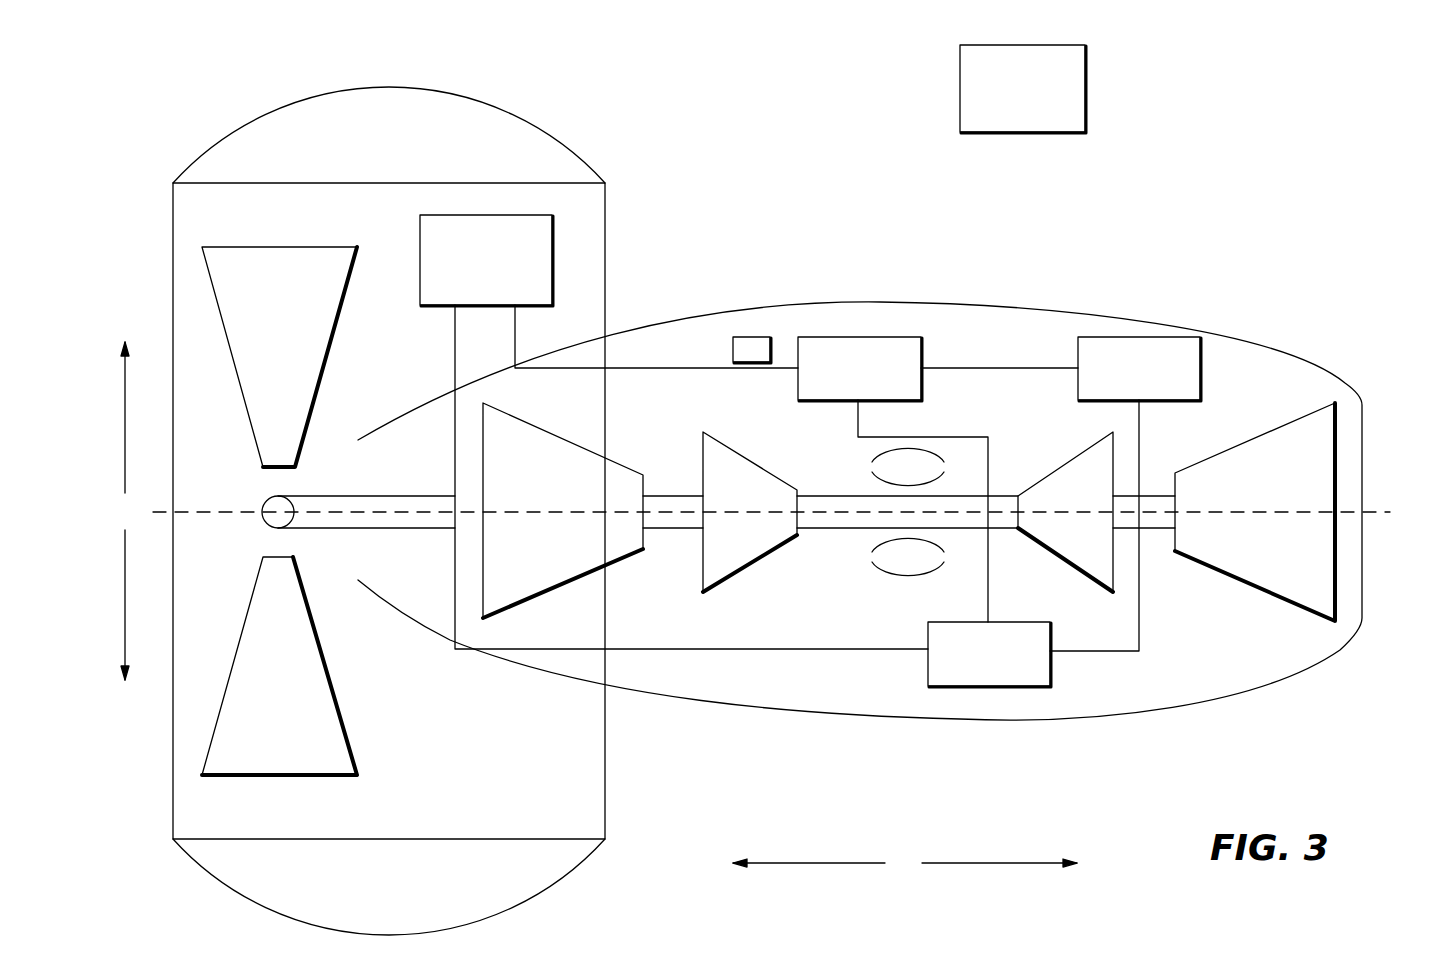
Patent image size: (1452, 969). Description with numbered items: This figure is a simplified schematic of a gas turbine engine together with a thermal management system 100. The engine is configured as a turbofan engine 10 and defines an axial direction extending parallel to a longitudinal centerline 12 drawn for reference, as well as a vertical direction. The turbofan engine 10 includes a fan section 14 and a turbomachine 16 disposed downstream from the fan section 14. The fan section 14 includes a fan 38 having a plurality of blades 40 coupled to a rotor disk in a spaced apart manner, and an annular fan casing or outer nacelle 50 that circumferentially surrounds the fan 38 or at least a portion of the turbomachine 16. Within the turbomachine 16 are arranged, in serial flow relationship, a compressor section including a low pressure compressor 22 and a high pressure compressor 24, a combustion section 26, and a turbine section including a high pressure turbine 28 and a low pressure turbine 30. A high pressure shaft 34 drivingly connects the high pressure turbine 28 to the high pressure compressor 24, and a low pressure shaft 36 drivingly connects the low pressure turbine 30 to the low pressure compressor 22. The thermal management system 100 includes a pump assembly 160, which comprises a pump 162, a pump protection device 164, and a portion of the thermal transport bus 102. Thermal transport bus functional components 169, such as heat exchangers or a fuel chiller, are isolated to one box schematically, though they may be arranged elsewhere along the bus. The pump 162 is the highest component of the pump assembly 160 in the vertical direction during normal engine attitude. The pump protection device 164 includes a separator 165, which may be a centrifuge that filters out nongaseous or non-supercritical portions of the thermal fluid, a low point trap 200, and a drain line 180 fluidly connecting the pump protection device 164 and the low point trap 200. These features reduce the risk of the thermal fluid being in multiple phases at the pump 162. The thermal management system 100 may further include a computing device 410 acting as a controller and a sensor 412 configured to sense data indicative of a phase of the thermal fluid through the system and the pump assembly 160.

The turbofan engine 10 is at (1150, 148).
The longitudinal centerline 12 is at (1385, 510).
The fan section 14 is at (150, 118).
The turbomachine 16 is at (742, 775).
The low pressure compressor 22 is at (575, 445).
The high pressure compressor 24 is at (745, 470).
The combustion section 26 is at (870, 585).
The high pressure turbine 28 is at (1062, 478).
The low pressure turbine 30 is at (1352, 448).
The high pressure shaft 34 is at (835, 530).
The low pressure shaft 36 is at (672, 530).
The fan 38 is at (187, 713).
The blades 40 is at (320, 696).
The outer nacelle 50 is at (455, 113).
The thermal management system 100 is at (697, 282).
The thermal transport bus 102 is at (650, 368).
The pump assembly 160 is at (857, 678).
The pump 162 is at (510, 215).
The pump protection device 164 is at (902, 325).
The separator 165 is at (828, 337).
The thermal transport bus functional components 169 is at (1138, 337).
The drain line 180 is at (940, 437).
The low point trap 200 is at (1008, 690).
The computing device 410 is at (958, 100).
The sensor 412 is at (752, 337).